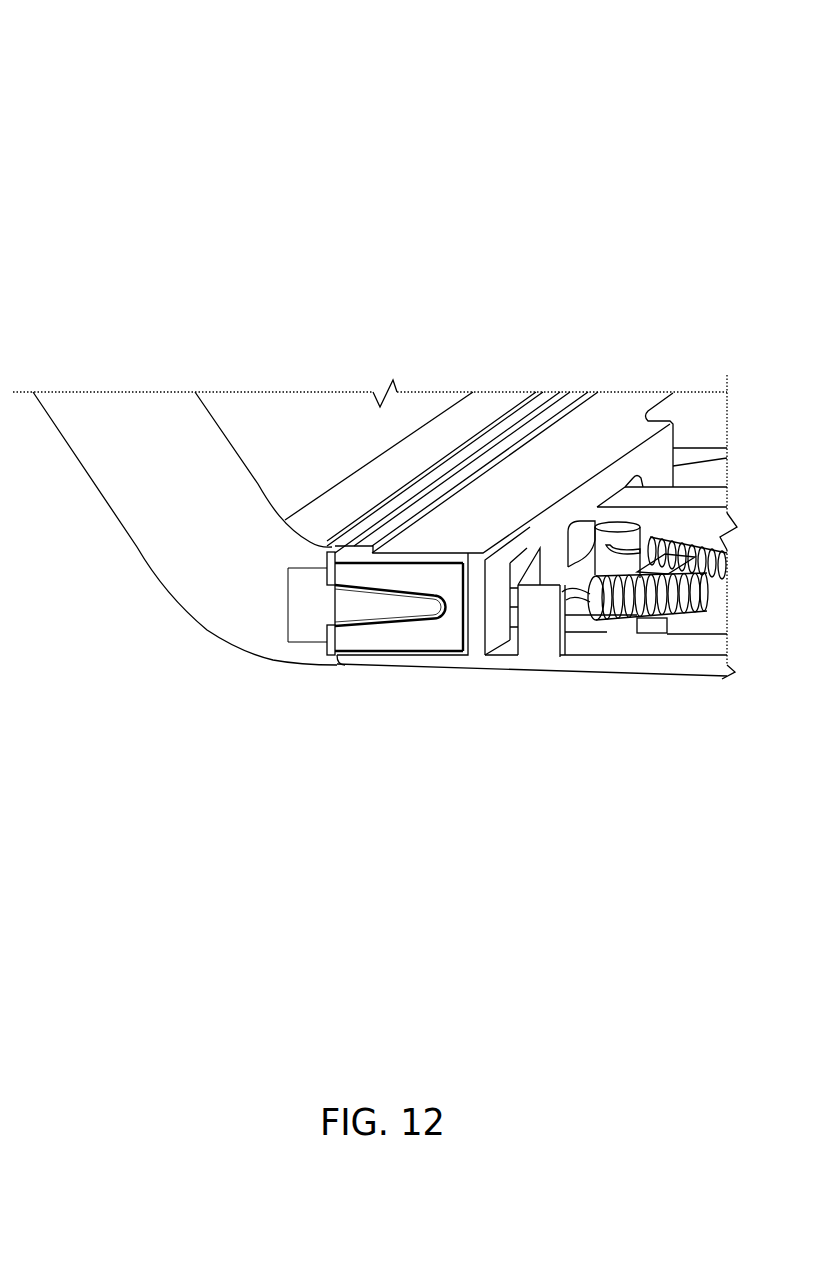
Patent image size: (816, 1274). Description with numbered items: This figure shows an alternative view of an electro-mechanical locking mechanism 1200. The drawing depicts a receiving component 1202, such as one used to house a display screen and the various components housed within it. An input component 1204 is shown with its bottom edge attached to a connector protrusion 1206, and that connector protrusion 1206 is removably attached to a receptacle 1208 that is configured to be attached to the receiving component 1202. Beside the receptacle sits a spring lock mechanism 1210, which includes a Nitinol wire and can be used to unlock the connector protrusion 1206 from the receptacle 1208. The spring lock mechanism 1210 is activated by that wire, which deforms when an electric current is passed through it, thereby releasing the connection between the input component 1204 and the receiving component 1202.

The electro-mechanical locking mechanism 1200 is at (130, 62).
The receiving component 1202 is at (482, 670).
The input component 1204 is at (137, 547).
The connector protrusion 1206 is at (343, 621).
The receptacle 1208 is at (431, 654).
The spring lock mechanism 1210 is at (664, 630).